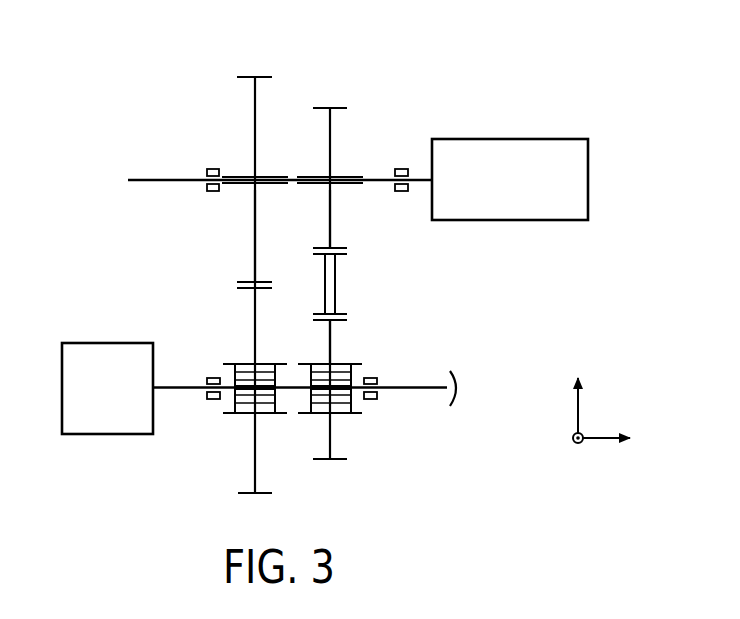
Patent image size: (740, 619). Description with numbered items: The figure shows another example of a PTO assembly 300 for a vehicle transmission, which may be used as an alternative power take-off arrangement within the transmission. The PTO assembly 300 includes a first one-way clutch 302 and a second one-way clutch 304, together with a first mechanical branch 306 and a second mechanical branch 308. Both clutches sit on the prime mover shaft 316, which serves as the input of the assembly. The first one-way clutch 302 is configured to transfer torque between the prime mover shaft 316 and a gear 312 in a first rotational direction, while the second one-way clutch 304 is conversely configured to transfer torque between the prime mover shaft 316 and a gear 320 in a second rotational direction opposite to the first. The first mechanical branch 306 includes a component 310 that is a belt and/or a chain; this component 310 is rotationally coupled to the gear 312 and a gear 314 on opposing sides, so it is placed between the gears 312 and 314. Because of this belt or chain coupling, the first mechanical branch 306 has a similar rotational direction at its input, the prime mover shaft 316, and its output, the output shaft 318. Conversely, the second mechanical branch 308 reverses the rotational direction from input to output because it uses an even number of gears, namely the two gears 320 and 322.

The PTO assembly 300 is at (629, 99).
The first one-way clutch 302 is at (368, 361).
The second one-way clutch 304 is at (215, 361).
The first mechanical branch 306 is at (331, 101).
The second mechanical branch 308 is at (255, 71).
The component 310 is at (335, 281).
The gear 312 is at (328, 335).
The gear 314 is at (328, 218).
The prime mover shaft 316 is at (176, 392).
The output shaft 318 is at (164, 177).
The gear 320 is at (253, 299).
The gear 322 is at (253, 245).